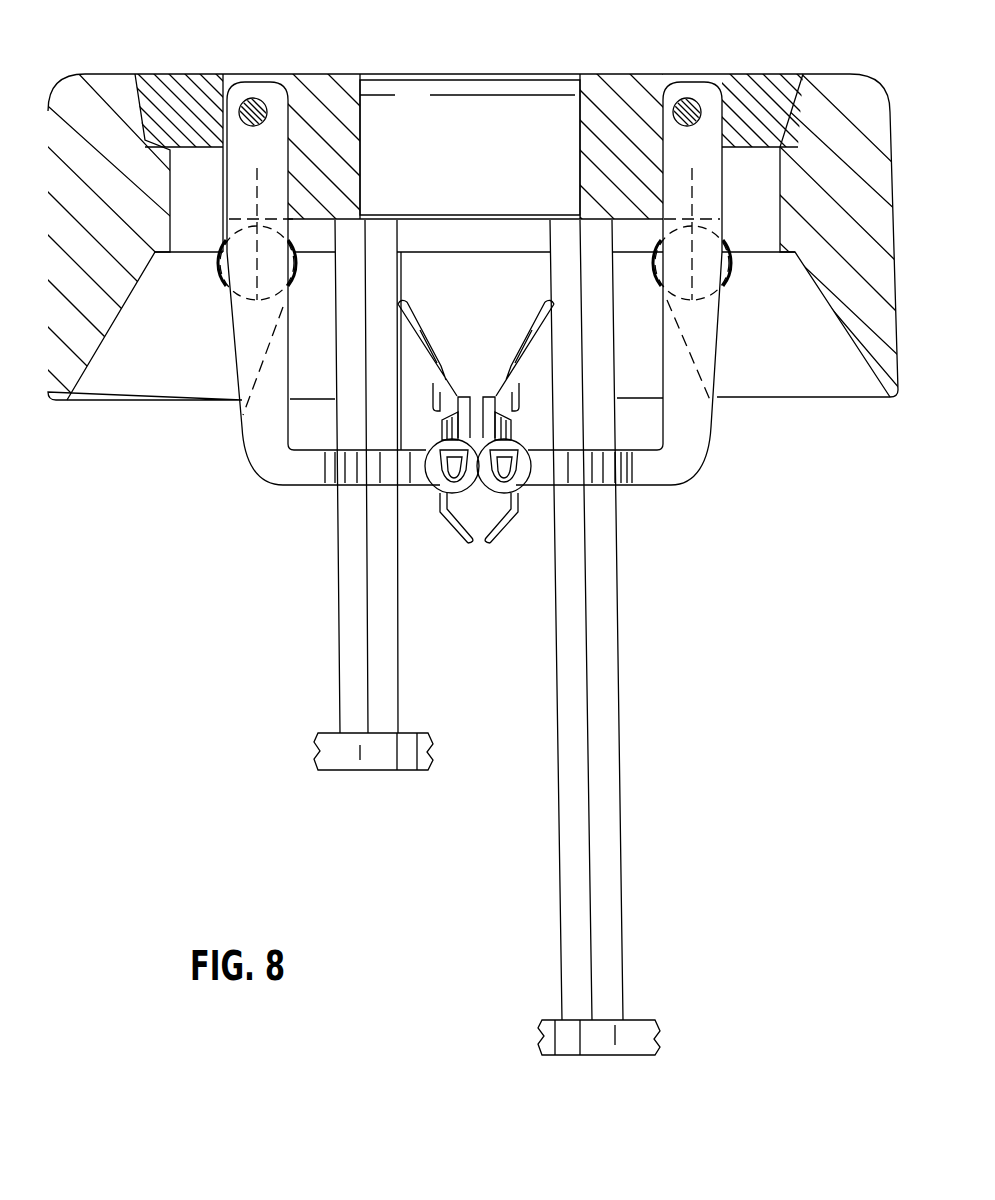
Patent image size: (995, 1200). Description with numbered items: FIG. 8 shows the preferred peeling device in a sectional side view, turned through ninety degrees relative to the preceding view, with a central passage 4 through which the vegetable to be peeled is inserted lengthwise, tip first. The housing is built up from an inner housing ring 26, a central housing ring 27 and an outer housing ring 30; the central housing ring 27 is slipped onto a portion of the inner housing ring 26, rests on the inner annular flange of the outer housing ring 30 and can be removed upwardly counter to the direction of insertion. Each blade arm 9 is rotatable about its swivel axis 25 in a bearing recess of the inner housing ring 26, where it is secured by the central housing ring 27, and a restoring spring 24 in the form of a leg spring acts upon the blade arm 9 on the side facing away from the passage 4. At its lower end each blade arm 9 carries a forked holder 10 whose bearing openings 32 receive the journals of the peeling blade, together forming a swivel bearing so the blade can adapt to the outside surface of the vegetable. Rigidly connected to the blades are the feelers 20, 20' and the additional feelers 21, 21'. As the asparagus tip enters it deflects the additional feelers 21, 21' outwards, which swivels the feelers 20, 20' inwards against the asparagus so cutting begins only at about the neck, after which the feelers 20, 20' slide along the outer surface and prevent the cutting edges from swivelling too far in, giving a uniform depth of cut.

The passage 4 is at (503, 107).
The blade arm 9 is at (277, 473).
The forked holder 10 is at (601, 473).
The feeler 20 is at (438, 350).
The feeler 20' is at (504, 370).
The additional feeler 21 is at (445, 559).
The additional feeler 21' is at (505, 562).
The restoring spring 24 is at (260, 350).
The swivel axis 25 is at (254, 100).
The inner housing ring 26 is at (318, 95).
The central housing ring 27 is at (760, 83).
The outer housing ring 30 is at (833, 90).
The bearing opening 32 is at (528, 484).